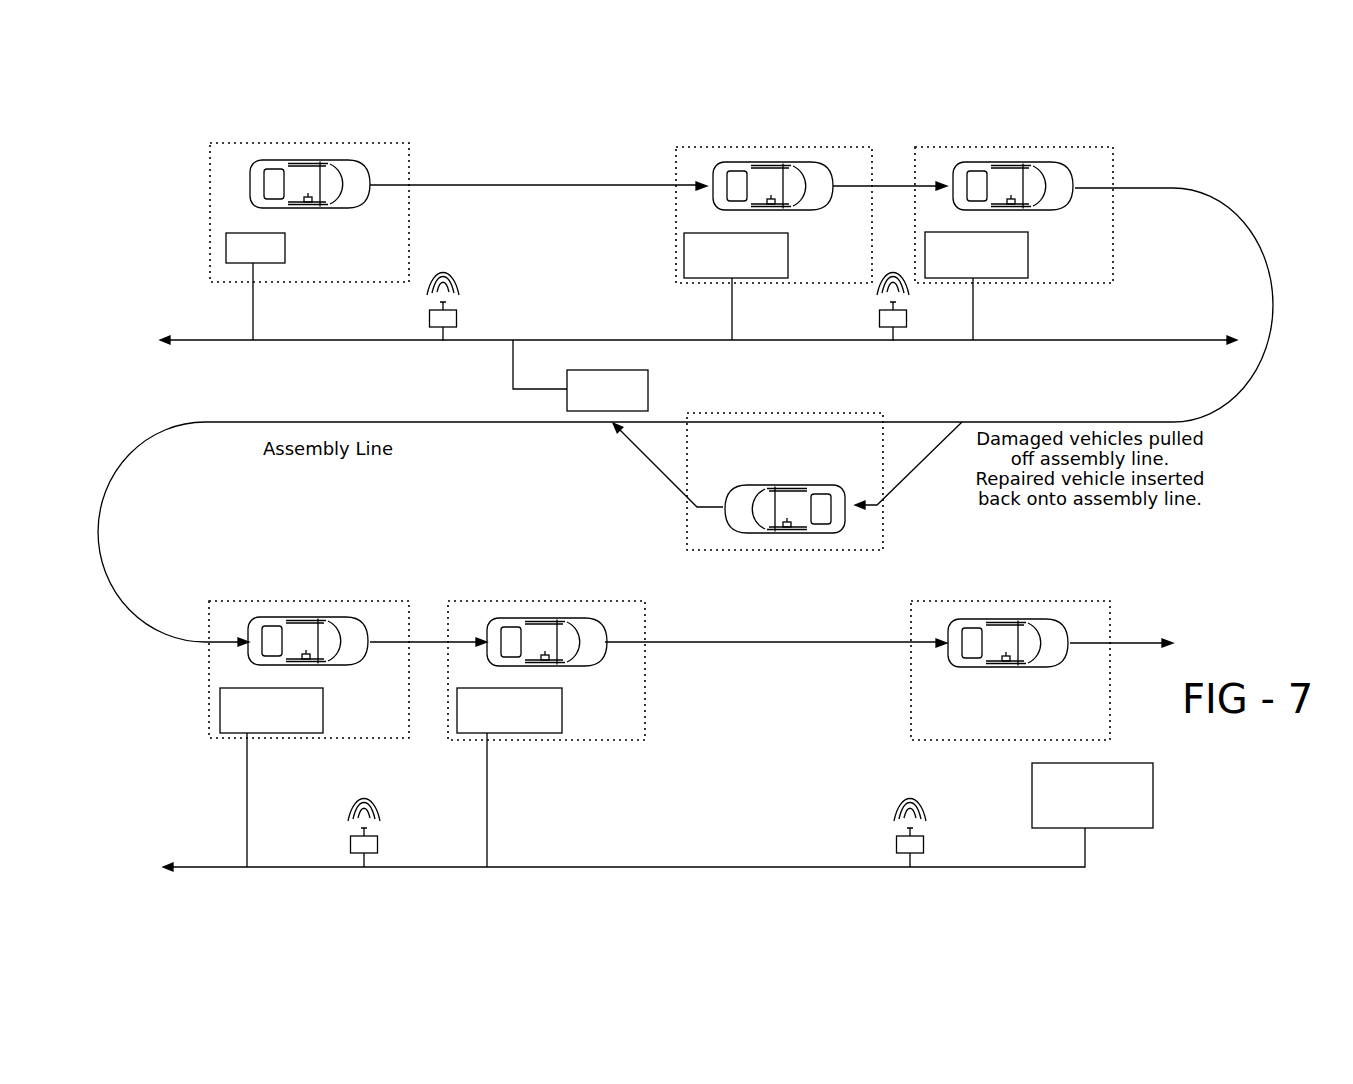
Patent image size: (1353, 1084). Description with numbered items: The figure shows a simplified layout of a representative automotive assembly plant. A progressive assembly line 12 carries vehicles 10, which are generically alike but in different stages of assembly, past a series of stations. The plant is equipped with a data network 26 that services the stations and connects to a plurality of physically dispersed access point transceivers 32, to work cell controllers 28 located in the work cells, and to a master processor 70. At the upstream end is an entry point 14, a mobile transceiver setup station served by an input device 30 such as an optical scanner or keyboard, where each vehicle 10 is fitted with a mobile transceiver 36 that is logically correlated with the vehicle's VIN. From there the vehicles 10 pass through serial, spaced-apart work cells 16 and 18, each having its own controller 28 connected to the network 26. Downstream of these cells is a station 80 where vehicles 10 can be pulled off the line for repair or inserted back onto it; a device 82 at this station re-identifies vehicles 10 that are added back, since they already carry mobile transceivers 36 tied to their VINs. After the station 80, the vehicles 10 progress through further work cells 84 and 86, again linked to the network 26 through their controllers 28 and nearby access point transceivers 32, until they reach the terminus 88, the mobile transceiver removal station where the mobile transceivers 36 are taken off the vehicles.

The vehicle 10 is at (250, 182).
The assembly line 12 is at (535, 185).
The entry point 14 is at (409, 172).
The work cell 16 is at (676, 152).
The work cell 18 is at (1113, 180).
The plant network 26 is at (575, 340).
The work cell controller 28 is at (684, 272).
The input device 30 is at (226, 243).
The access point transceiver 32 is at (457, 320).
The mobile transceiver 36 is at (310, 199).
The master processor 70 is at (1153, 780).
The station 80 is at (875, 412).
The device 82 is at (565, 400).
The work cell 84 is at (408, 608).
The work cell 86 is at (645, 612).
The terminus 88 is at (911, 615).